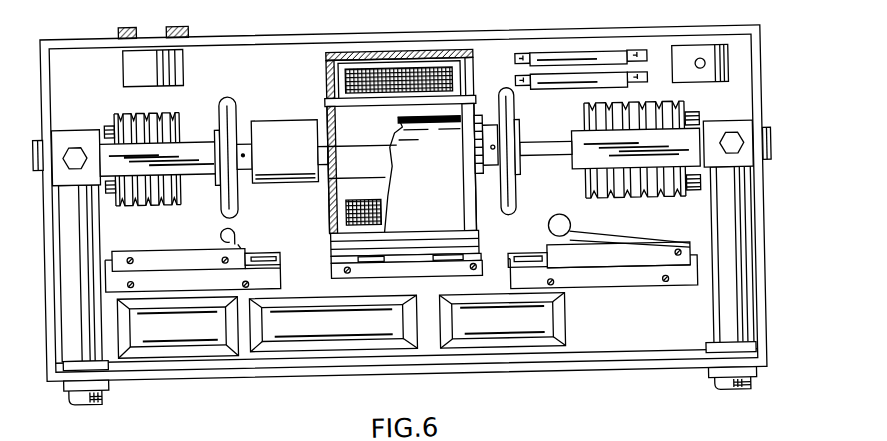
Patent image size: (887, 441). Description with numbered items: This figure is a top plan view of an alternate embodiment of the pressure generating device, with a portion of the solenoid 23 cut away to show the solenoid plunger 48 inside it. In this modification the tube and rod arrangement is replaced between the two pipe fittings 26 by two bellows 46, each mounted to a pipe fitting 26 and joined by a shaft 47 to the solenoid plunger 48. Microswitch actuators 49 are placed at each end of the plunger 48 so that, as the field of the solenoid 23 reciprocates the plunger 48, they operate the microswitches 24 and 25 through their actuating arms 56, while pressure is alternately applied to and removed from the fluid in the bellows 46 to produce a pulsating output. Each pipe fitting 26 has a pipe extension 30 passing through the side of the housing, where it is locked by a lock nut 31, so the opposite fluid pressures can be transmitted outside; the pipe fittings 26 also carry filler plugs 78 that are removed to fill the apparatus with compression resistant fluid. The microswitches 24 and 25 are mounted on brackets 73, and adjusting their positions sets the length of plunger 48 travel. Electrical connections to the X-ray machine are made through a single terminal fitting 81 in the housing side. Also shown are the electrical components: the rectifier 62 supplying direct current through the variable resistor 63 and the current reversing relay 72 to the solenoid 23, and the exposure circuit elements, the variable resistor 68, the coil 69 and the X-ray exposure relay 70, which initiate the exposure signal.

The solenoid 23 is at (333, 76).
The microswitch 24 is at (150, 250).
The microswitch 25 is at (642, 263).
The pipe fitting 26 is at (65, 123).
The pipe extension 30 is at (78, 226).
The lock nut 31 is at (102, 380).
The bellows 46 is at (167, 115).
The shaft 47 is at (539, 143).
The solenoid plunger 48 is at (287, 126).
The microswitch actuator 49 is at (235, 108).
The actuating arm 56 is at (194, 238).
The rectifier 62 is at (734, 69).
The variable resistor 63 is at (587, 62).
The variable resistor 68 is at (603, 84).
The coil 69 is at (501, 340).
The X-ray exposure relay 70 is at (189, 348).
The current reversing relay 72 is at (339, 341).
The bracket 73 is at (274, 280).
The filler plug 78 is at (82, 144).
The terminal fitting 81 is at (183, 68).